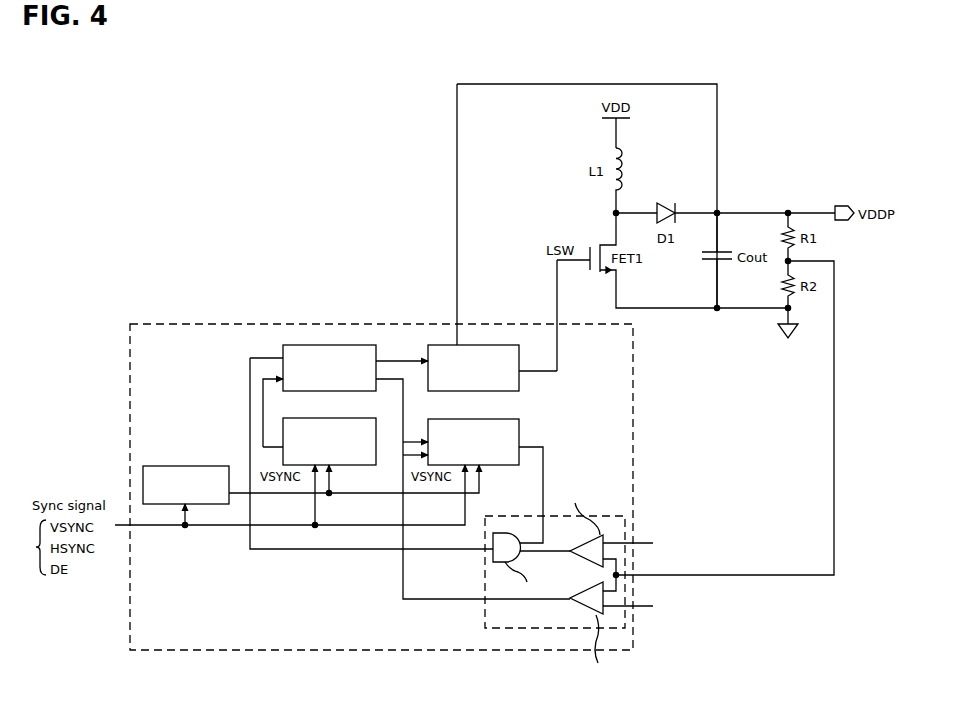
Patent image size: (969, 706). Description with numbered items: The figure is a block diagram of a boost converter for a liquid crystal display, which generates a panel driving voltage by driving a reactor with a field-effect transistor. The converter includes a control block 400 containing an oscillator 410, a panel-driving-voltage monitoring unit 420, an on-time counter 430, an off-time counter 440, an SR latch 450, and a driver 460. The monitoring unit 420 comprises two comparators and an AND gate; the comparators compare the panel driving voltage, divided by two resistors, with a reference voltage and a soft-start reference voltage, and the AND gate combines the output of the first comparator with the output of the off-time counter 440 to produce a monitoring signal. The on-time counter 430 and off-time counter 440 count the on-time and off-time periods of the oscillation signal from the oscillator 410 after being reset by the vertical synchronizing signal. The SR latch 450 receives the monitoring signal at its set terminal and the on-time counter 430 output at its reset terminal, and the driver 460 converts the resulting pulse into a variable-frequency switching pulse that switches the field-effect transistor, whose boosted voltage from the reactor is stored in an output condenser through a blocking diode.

The control block 400 is at (205, 323).
The oscillator 410 is at (177, 466).
The panel-driving-voltage monitoring unit 420 is at (625, 523).
The on-time counter 430 is at (296, 418).
The off-time counter 440 is at (513, 419).
The SR latch 450 is at (322, 345).
The driver 460 is at (475, 345).